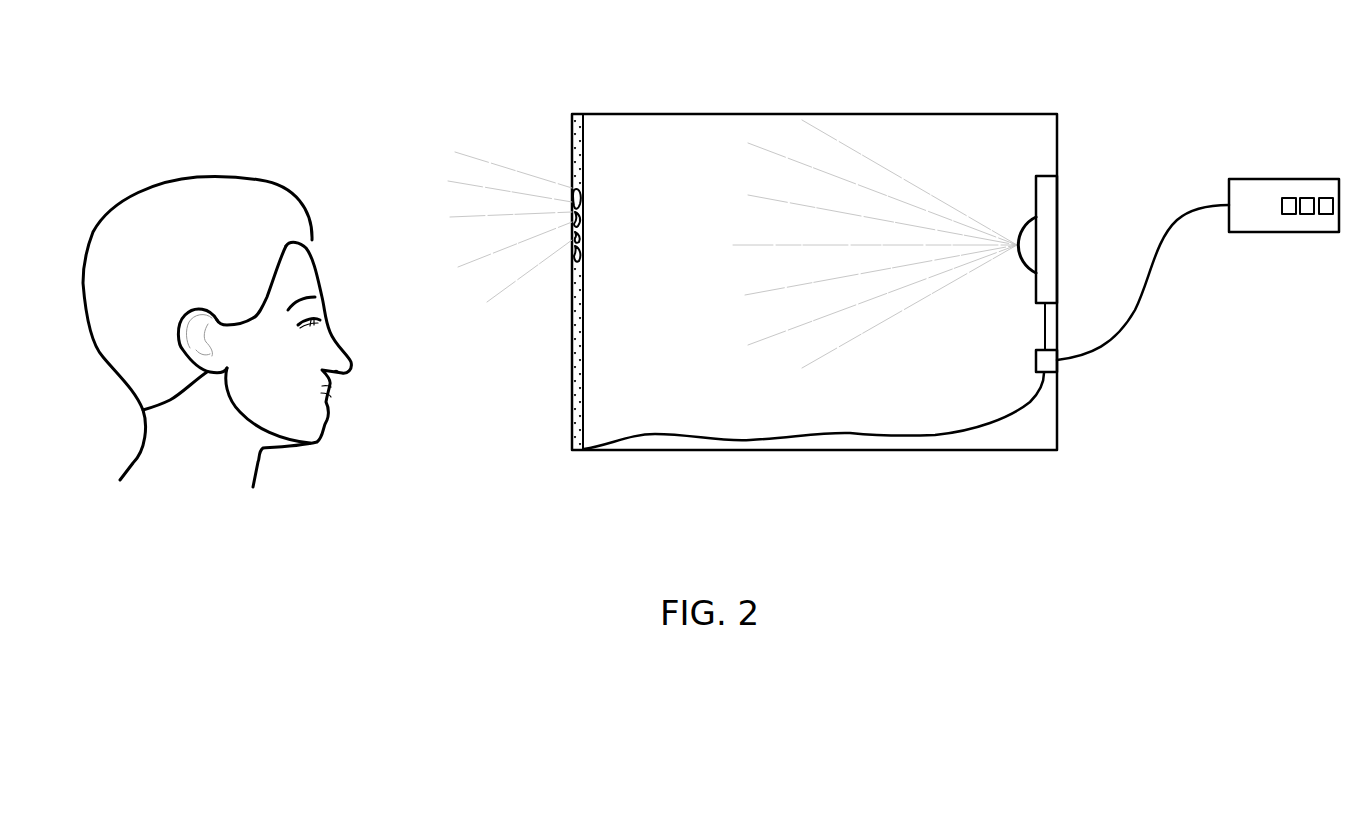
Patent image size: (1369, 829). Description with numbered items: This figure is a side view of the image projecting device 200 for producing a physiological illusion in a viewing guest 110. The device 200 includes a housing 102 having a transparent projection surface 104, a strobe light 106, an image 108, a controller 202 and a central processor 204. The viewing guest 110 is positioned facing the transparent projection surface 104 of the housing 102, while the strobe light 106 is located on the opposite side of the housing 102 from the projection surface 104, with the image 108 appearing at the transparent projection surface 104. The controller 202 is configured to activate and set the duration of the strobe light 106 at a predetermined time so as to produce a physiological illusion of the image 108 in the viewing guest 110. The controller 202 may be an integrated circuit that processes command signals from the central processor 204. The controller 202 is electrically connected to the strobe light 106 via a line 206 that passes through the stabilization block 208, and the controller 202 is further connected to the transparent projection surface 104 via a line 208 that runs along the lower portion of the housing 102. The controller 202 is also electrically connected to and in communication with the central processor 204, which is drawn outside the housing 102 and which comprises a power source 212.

The viewing guest 110 is at (182, 197).
The image projecting device 200 is at (1088, 72).
The housing 102 is at (942, 113).
The transparent projection surface 104 is at (572, 125).
The image 108 is at (570, 253).
The strobe light 106 is at (1022, 223).
The stabilization block 208 is at (1060, 190).
The line 206 is at (1045, 326).
The controller 202 is at (1036, 362).
The central processor 204 is at (1284, 232).
The power source 212 is at (1323, 198).